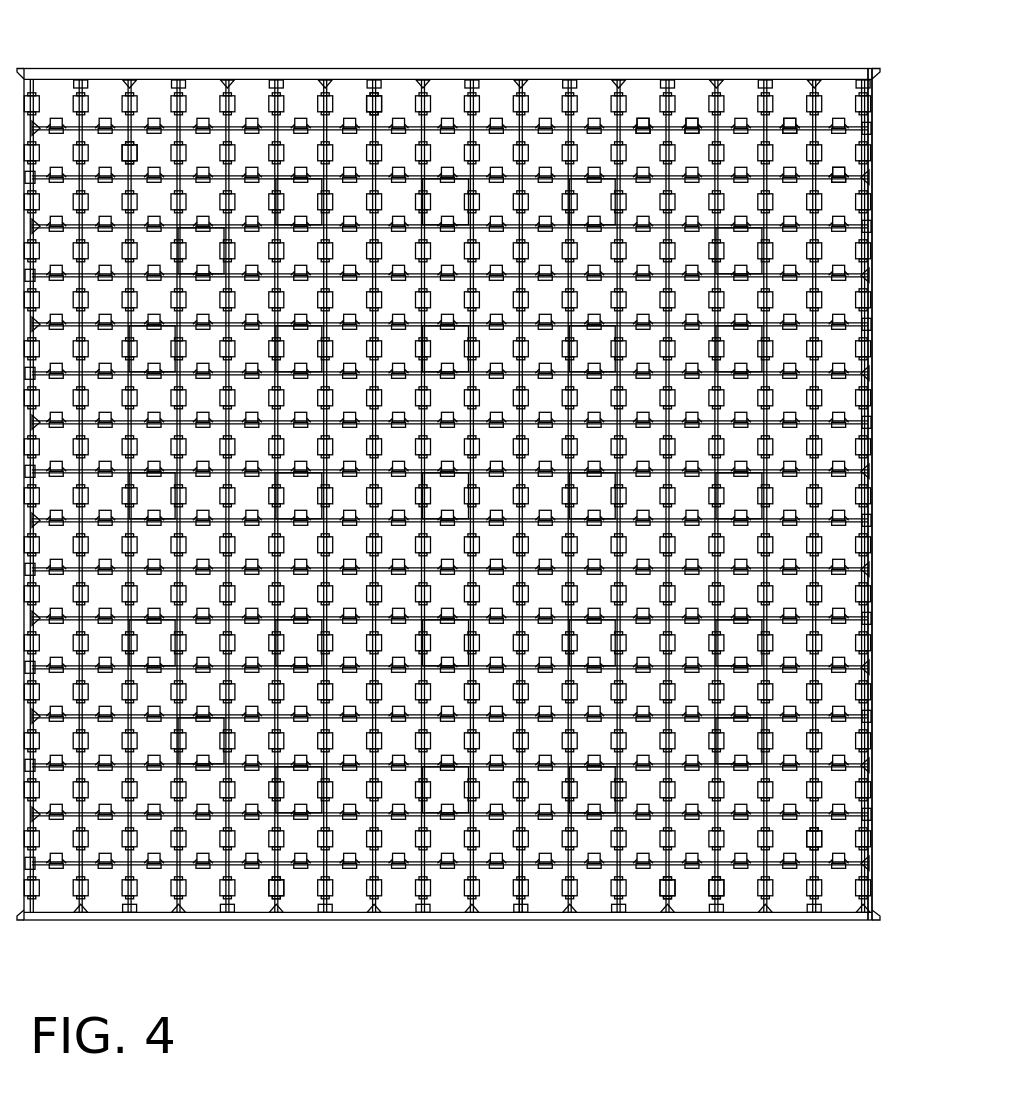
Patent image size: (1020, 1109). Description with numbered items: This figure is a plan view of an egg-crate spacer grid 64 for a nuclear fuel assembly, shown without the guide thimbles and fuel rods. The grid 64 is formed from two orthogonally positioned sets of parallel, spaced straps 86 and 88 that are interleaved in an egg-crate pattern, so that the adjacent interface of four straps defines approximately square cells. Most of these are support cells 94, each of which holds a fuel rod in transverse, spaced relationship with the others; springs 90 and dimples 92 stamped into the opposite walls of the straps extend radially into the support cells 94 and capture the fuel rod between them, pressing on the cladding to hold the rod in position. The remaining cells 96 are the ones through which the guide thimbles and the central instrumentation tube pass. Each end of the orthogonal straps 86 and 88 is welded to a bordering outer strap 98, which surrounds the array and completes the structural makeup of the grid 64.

The grid 64 is at (491, 33).
The strap 86 is at (670, 118).
The strap 88 is at (827, 170).
The spring 90 is at (510, 890).
The dimple 92 is at (285, 885).
The support cell 94 is at (109, 153).
The cell 96 is at (446, 496).
The outer strap 98 is at (877, 860).